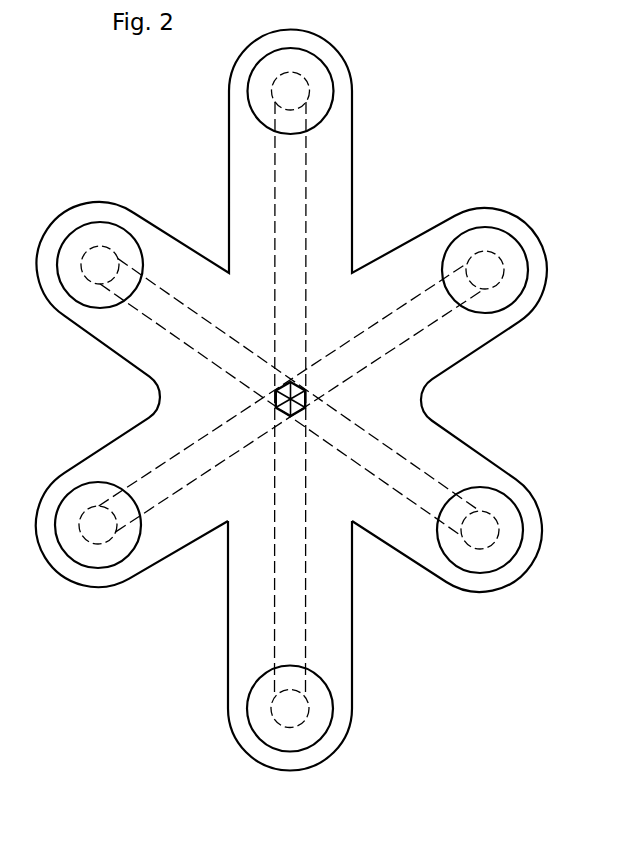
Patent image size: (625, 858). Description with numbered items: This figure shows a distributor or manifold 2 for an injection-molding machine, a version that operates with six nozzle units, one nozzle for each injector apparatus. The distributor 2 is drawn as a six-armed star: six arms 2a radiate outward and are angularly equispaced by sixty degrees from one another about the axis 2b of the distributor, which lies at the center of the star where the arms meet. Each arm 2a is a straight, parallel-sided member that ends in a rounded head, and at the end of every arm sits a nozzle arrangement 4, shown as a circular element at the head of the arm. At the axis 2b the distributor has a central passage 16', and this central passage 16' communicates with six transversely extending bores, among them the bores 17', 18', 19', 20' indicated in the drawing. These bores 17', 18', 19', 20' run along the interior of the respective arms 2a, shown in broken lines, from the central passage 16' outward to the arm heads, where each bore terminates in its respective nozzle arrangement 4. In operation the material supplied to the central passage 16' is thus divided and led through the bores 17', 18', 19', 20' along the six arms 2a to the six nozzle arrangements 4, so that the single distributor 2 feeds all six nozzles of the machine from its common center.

The distributor 2 is at (397, 212).
The arm 2a is at (353, 648).
The axis 2b is at (308, 399).
The nozzle arrangement 4 is at (248, 91).
The central passage 16' is at (267, 399).
The transversely extending bore 17' is at (199, 335).
The transversely extending bore 18' is at (380, 461).
The transversely extending bore 19' is at (199, 458).
The transversely extending bore 20' is at (383, 336).